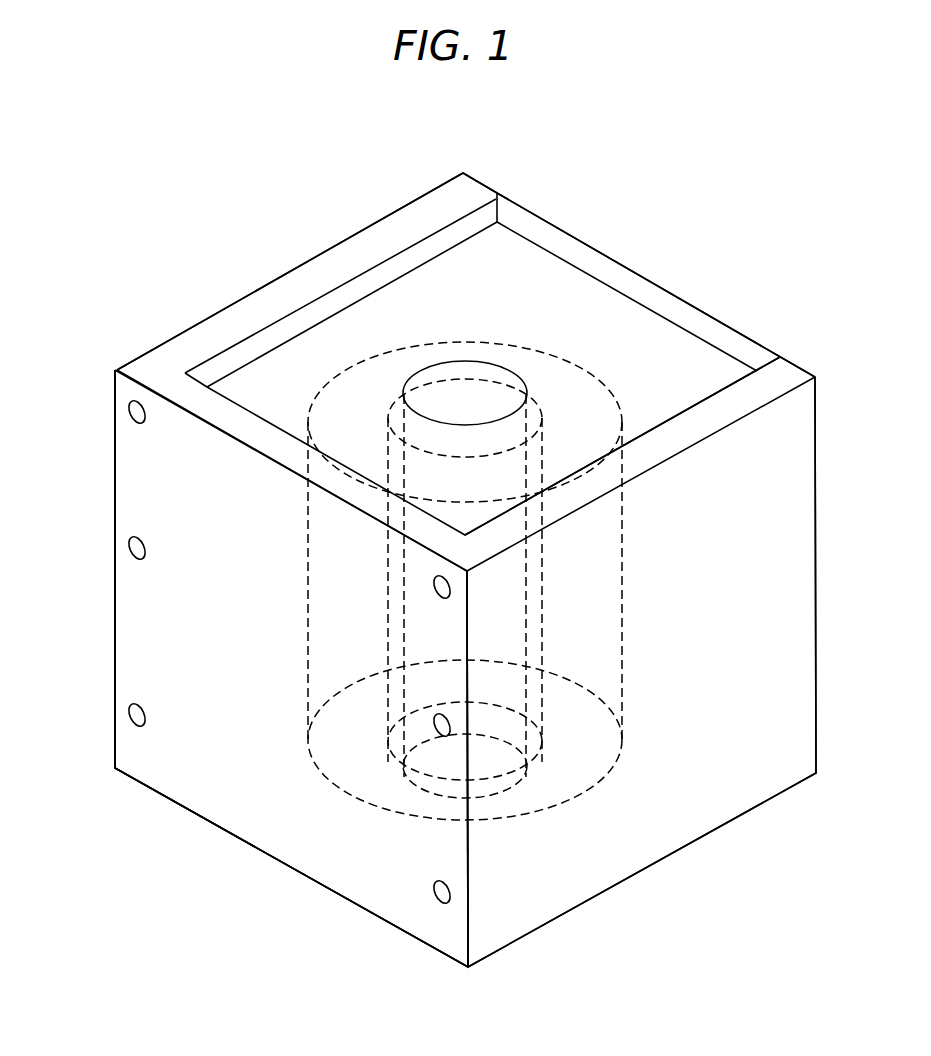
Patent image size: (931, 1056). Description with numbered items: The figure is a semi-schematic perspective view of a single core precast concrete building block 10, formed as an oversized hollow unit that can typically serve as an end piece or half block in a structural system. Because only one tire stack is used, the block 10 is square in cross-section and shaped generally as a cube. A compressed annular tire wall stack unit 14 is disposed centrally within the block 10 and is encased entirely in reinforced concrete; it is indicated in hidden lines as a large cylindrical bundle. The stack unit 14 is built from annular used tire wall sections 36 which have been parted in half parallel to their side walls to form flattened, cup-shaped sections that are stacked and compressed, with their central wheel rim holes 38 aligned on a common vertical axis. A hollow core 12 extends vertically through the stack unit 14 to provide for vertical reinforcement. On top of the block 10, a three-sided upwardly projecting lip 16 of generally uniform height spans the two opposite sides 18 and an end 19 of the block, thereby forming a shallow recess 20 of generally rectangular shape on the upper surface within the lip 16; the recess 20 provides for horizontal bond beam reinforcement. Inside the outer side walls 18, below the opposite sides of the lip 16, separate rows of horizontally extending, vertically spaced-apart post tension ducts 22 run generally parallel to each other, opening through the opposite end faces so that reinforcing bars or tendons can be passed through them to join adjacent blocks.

The precast concrete building block 10 is at (670, 267).
The hollow core 12 is at (498, 366).
The compressed annular tire wall stack unit 14 is at (623, 626).
The upwardly projecting lip 16 is at (298, 290).
The opposite sides 18 is at (193, 327).
The end 19 is at (247, 666).
The shallow recess 20 is at (678, 350).
The post tension ducts 22 is at (131, 417).
The annular used tire wall sections 36 is at (444, 344).
The central wheel rim holes 38 is at (536, 403).